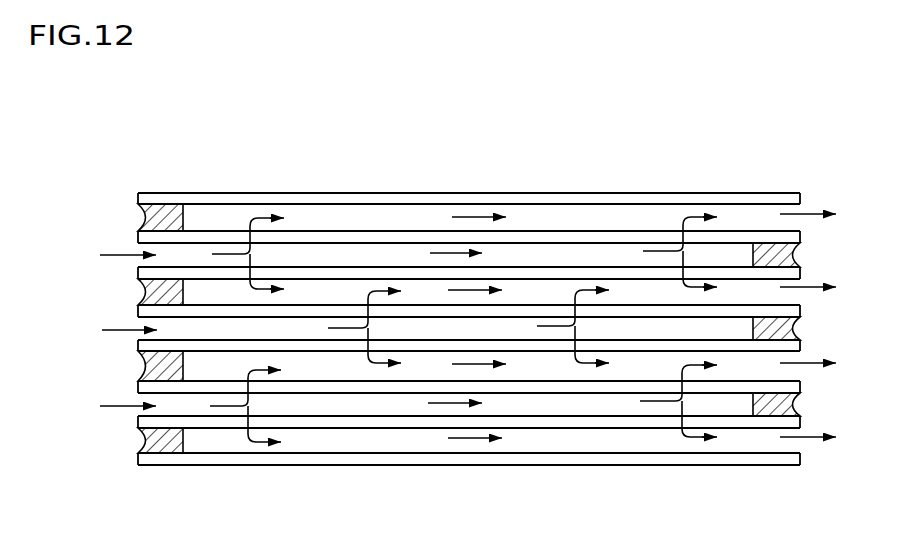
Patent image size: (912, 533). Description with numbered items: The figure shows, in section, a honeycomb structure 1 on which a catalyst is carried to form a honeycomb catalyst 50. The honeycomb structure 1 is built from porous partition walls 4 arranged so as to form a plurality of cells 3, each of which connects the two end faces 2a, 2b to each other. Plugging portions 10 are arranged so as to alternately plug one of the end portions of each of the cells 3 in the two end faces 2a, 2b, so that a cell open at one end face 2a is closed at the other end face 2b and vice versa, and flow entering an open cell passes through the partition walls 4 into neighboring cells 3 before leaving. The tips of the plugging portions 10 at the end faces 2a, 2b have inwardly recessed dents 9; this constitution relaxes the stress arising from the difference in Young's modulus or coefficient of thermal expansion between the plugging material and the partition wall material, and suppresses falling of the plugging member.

The honeycomb structure 1 is at (350, 182).
The honeycomb catalyst 50 is at (461, 315).
The end face 2a is at (139, 192).
The end face 2b is at (800, 191).
The cell 3 is at (612, 213).
The partition wall 4 is at (340, 425).
The inwardly recessed dent 9 is at (143, 219).
The plugging portion 10 is at (158, 370).